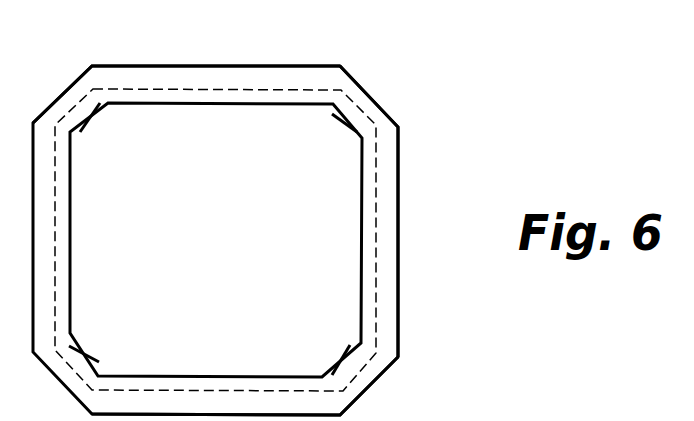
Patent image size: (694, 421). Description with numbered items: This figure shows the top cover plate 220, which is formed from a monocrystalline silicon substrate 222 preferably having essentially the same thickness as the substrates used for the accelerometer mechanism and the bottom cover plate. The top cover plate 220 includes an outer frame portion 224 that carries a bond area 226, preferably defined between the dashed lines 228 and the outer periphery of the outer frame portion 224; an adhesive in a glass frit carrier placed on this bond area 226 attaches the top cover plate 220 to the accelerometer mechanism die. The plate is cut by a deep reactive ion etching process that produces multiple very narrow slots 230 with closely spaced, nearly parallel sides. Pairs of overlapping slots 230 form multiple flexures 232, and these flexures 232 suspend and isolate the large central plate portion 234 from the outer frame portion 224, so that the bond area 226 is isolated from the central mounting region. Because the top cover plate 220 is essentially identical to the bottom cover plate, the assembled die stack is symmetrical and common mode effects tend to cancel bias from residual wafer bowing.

The top cover plate 220 is at (398, 92).
The monocrystalline silicon substrate 222 is at (399, 148).
The outer frame portion 224 is at (386, 377).
The bond area 226 is at (292, 85).
The dashed lines 228 is at (172, 89).
The slots 230 is at (362, 273).
The flexures 232 is at (360, 347).
The central plate portion 234 is at (313, 206).